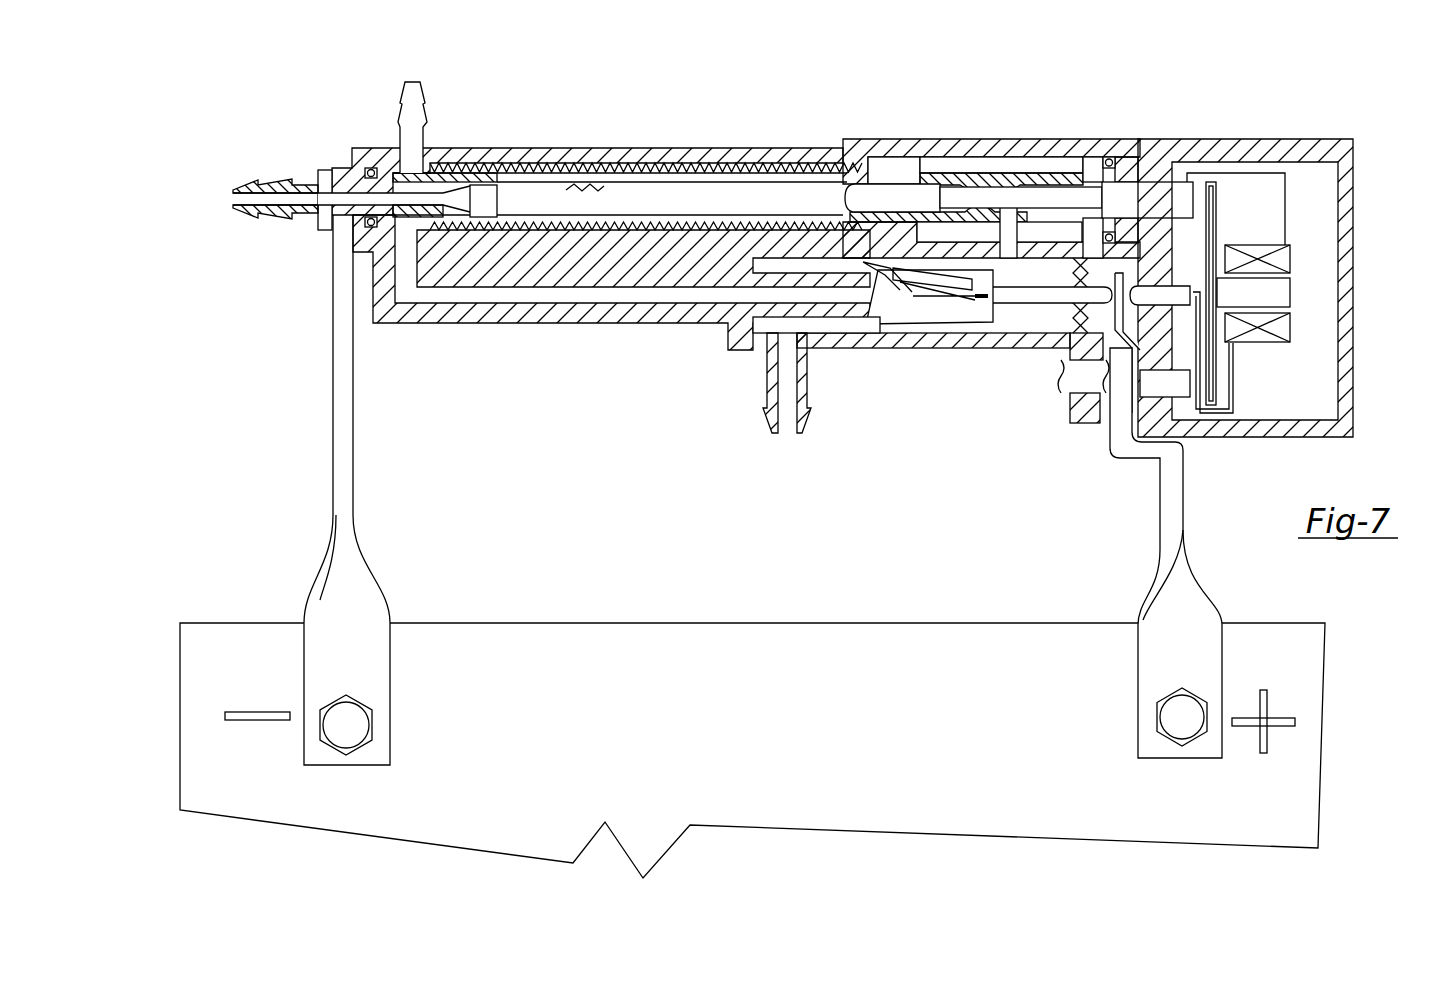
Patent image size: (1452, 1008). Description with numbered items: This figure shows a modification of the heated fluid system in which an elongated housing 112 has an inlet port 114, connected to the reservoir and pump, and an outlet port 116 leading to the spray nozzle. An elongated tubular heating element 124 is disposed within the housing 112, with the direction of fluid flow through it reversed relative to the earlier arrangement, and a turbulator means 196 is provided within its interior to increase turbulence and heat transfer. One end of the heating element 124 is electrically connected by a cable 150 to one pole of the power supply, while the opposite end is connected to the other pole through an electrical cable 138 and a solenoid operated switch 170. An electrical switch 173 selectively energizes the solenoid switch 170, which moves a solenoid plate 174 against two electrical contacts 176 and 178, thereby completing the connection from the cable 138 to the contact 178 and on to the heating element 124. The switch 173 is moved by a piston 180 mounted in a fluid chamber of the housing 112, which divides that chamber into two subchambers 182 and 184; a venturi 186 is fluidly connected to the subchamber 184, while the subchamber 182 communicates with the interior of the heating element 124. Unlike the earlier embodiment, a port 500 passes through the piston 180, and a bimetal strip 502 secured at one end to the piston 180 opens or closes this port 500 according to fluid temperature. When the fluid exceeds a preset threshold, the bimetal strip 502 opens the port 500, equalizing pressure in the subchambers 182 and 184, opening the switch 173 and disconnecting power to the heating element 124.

The housing 112 is at (806, 155).
The inlet port 114 is at (404, 86).
The outlet port 116 is at (763, 407).
The heating element 124 is at (720, 187).
The electrical cable 138 is at (1173, 512).
The cable 150 is at (343, 440).
The solenoid operated switch 170 is at (1322, 137).
The electrical switch 173 is at (1121, 312).
The solenoid plate 174 is at (1213, 183).
The electrical contact 176 is at (1177, 392).
The electrical contact 178 is at (1162, 188).
The piston 180 is at (985, 322).
The subchamber 182 is at (890, 295).
The subchamber 184 is at (1050, 315).
The venturi 186 is at (1017, 197).
The turbulator means 196 is at (602, 151).
The port 500 is at (863, 263).
The bimetal strip 502 is at (960, 318).